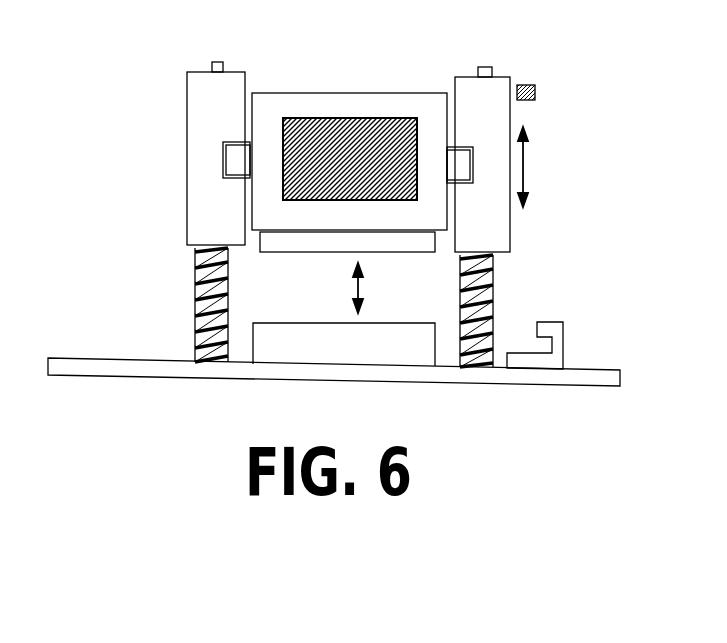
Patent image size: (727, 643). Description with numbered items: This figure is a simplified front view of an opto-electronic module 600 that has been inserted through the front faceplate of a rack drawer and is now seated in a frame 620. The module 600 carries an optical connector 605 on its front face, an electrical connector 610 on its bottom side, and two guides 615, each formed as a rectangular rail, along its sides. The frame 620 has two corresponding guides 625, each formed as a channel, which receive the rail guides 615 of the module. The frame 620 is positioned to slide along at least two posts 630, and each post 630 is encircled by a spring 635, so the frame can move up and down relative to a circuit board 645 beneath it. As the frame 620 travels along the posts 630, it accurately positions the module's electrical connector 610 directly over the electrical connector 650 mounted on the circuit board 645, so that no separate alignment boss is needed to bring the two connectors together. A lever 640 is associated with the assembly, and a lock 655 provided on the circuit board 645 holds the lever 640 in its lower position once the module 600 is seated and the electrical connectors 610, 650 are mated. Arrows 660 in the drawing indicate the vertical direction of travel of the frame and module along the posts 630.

The opto-electronic module 600 is at (323, 92).
The optical connector 605 is at (372, 118).
The electrical connector 610 is at (310, 242).
The guides 615 is at (243, 177).
The frame 620 is at (198, 70).
The guides 625 is at (238, 142).
The posts 630 is at (480, 65).
The spring 635 is at (200, 285).
The lever 640 is at (525, 85).
The circuit board 645 is at (140, 360).
The electrical connector 650 is at (283, 323).
The lock 655 is at (603, 323).
The direction of motion 660 is at (523, 167).